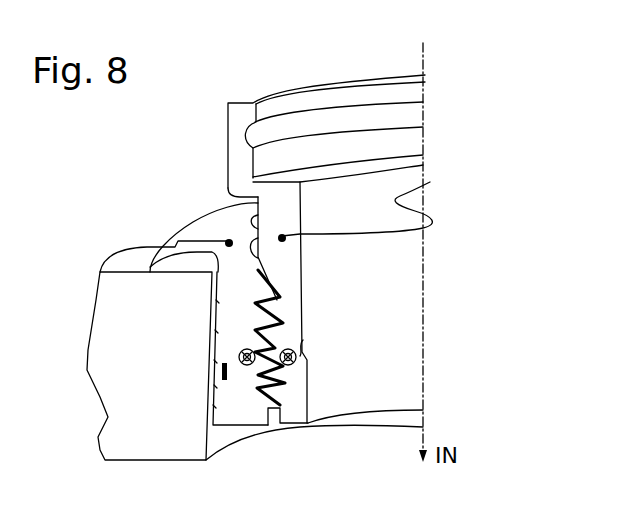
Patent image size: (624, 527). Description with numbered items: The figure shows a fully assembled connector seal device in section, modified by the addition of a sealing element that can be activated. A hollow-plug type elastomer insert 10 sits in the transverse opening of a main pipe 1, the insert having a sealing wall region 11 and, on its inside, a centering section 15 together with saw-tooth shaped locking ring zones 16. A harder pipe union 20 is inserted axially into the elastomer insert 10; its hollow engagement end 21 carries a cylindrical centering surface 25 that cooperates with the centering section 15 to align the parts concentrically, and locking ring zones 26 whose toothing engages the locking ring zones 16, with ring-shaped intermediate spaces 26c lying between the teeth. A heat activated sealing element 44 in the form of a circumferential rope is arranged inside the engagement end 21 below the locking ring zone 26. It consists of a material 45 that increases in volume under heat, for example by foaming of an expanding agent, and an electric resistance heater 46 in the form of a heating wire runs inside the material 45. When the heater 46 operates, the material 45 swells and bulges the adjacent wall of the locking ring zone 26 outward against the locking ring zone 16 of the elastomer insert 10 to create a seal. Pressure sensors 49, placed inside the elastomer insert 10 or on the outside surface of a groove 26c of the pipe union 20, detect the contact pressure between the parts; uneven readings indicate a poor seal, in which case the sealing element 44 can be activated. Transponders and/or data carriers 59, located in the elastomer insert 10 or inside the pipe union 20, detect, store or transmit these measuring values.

The main pipe 1 is at (142, 471).
The elastomer insert 10 is at (182, 220).
The sealing wall region 11 is at (248, 416).
The centering section 15 is at (248, 272).
The locking ring zones 16 is at (417, 325).
The pipe union 20 is at (256, 93).
The engagement end 21 is at (297, 410).
The cylindrical centering surface 25 is at (260, 210).
The locking ring zones 26 is at (303, 340).
The ring-shaped intermediate spaces 26c is at (289, 327).
The heat activated sealing element 44 is at (298, 362).
The material 45 is at (239, 351).
The electric resistance heater 46 is at (244, 350).
The pressure sensors 49 is at (278, 307).
The transponders and/or data carriers 59 is at (183, 253).